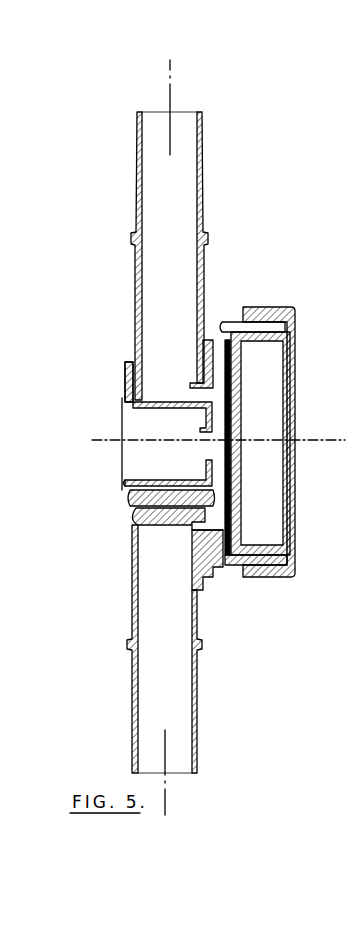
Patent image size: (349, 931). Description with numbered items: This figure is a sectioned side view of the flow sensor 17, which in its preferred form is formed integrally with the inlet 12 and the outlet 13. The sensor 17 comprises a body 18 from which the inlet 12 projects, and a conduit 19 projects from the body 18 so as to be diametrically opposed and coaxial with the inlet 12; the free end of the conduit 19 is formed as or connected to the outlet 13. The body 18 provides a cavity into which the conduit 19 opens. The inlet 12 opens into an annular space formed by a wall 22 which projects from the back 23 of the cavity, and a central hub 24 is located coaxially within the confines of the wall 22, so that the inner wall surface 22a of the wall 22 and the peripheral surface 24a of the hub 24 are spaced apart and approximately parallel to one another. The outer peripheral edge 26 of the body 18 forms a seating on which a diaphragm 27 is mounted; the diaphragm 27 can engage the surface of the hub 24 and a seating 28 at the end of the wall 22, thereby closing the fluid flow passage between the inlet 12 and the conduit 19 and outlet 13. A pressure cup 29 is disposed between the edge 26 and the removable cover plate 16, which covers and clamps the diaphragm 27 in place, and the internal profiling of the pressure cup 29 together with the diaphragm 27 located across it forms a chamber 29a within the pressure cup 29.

The inlet 12 is at (185, 212).
The outlet 13 is at (133, 712).
The removable cover plate 16 is at (288, 424).
The flow sensor 17 is at (116, 307).
The body 18 is at (122, 438).
The conduit 19 is at (133, 614).
The wall 22 is at (210, 345).
The inner wall surface 22a is at (200, 392).
The back 23 is at (123, 395).
The central hub 24 is at (148, 417).
The peripheral surface 24a is at (170, 402).
The outer peripheral edge 26 is at (208, 538).
The diaphragm 27 is at (290, 393).
The seating 28 is at (214, 381).
The pressure cup 29 is at (262, 486).
The chamber 29a is at (228, 547).